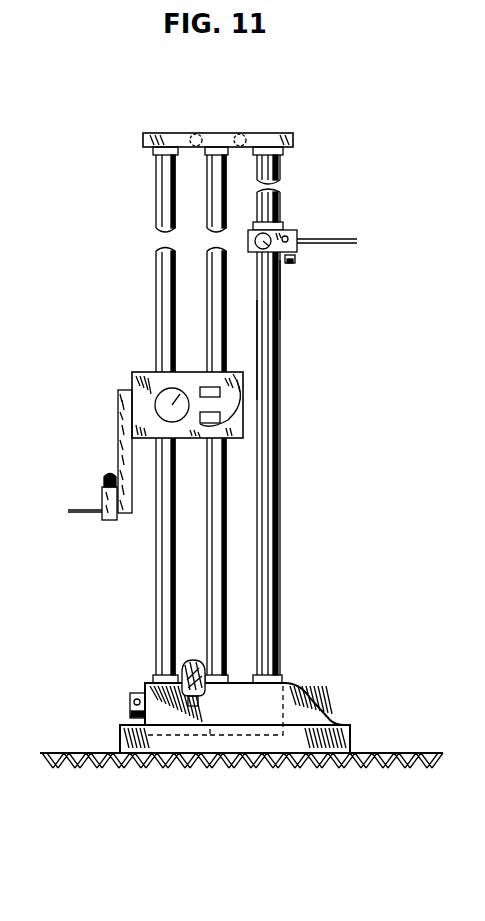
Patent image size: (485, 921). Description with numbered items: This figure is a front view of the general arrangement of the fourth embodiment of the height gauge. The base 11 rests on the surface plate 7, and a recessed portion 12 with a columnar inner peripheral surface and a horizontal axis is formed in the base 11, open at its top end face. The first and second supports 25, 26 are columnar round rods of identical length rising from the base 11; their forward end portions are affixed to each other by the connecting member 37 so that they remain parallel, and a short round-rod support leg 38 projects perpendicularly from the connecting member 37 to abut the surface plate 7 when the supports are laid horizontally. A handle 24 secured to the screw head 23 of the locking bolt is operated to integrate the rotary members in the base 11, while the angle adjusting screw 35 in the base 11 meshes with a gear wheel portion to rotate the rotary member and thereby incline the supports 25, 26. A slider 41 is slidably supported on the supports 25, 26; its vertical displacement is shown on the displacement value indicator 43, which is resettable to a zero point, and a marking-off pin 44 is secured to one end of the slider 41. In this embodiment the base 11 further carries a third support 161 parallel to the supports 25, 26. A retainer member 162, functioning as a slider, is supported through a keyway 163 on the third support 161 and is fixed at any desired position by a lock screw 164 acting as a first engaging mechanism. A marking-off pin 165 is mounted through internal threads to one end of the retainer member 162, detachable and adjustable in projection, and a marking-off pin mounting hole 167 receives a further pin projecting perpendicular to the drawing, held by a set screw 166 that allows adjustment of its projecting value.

The surface plate 7 is at (55, 753).
The base 11 is at (124, 737).
The recessed portion 12 is at (232, 757).
The screw head 23 is at (144, 690).
The handle 24 is at (130, 697).
The first support 25 is at (158, 571).
The second support 26 is at (212, 540).
The angle adjusting screw 35 is at (193, 662).
The connecting member 37 is at (186, 136).
The support leg 38 is at (240, 133).
The slider 41 is at (140, 372).
The displacement value indicator 43 is at (215, 390).
The marking-off pin 44 is at (86, 513).
The third support 161 is at (282, 434).
The retainer member 162 is at (277, 233).
The keyway 163 is at (281, 350).
The lock screw 164 is at (278, 282).
The marking-off pin 165 is at (352, 240).
The set screw 166 is at (294, 264).
The marking-off pin mounting hole 167 is at (289, 237).